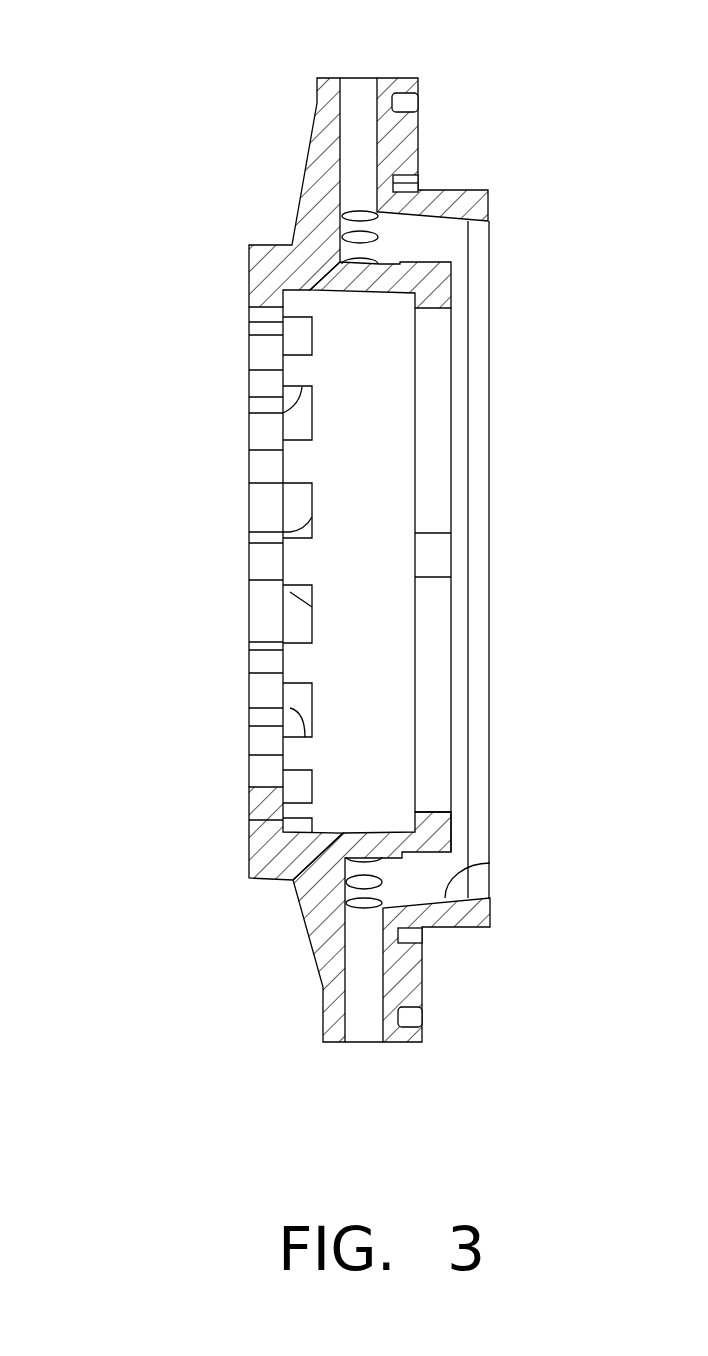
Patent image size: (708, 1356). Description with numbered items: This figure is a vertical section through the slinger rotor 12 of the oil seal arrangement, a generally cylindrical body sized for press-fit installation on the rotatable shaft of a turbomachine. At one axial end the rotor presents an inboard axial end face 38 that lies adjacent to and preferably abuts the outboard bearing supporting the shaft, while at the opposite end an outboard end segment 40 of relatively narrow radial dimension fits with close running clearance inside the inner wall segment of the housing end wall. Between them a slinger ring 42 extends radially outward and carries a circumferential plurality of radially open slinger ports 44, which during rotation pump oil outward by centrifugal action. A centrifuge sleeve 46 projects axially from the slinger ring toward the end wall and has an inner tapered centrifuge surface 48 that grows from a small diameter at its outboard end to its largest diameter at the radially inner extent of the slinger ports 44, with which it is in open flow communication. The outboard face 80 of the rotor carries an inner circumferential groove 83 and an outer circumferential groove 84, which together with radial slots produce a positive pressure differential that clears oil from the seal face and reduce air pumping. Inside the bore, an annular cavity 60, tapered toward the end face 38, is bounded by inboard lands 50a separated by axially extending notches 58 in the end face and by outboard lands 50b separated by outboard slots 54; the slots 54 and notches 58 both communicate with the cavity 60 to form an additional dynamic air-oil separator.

The slinger rotor 12 is at (180, 70).
The inboard axial end face 38 is at (249, 272).
The outboard end segment 40 is at (453, 287).
The slinger ring 42 is at (317, 95).
The slinger ports 44 is at (362, 93).
The centrifuge sleeve 46 is at (462, 912).
The inner tapered centrifuge surface 48 is at (465, 893).
The inboard lands 50a is at (267, 383).
The outboard lands 50b is at (447, 798).
The outboard slots 54 is at (433, 685).
The axially extending notches 58 is at (283, 617).
The annular cavity 60 is at (355, 292).
The outboard face 80 is at (418, 137).
The inner circumferential groove 83 is at (418, 182).
The outer circumferential groove 84 is at (418, 100).